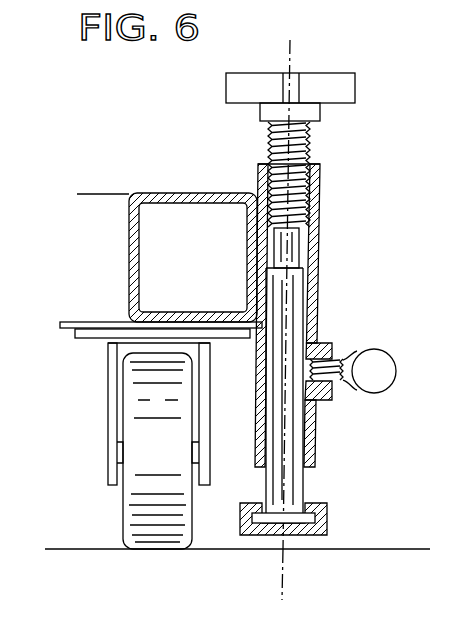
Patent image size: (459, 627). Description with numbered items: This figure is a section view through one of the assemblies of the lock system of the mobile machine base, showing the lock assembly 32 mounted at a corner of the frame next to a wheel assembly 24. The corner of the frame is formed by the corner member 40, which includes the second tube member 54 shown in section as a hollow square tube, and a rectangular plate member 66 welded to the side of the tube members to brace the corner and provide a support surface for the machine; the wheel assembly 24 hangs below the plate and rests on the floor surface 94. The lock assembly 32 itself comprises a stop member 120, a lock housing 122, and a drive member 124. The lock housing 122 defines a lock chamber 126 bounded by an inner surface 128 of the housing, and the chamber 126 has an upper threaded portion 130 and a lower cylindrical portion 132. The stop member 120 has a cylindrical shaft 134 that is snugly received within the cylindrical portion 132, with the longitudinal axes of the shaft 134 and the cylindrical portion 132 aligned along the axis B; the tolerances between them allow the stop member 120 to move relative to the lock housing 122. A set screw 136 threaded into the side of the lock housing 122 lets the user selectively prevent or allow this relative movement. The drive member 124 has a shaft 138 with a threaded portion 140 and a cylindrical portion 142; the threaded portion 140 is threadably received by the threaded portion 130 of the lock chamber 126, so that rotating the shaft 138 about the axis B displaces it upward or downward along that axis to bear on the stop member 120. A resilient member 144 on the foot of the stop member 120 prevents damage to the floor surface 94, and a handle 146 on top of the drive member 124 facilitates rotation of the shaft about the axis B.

The front wheel assembly 24 is at (112, 505).
The second locking assembly 32 is at (359, 171).
The fourth corner member 40 is at (158, 184).
The second tube member 54 is at (150, 194).
The rectangular plate member 66 is at (65, 330).
The floor surface 94 is at (107, 549).
The stop member 120 is at (304, 487).
The lock housing 122 is at (322, 297).
The drive member 124 is at (320, 129).
The lock chamber 126 is at (303, 250).
The inner surface 128 is at (318, 429).
The threaded portion 130 is at (322, 207).
The cylindrical portion 132 is at (296, 436).
The cylindrical shaft 134 is at (320, 477).
The set screw 136 is at (362, 386).
The shaft 138 is at (304, 144).
The threaded portion 140 is at (320, 184).
The cylindrical portion 142 is at (305, 279).
The resilient member 144 is at (322, 506).
The handle 146 is at (226, 93).
The axis B is at (281, 560).